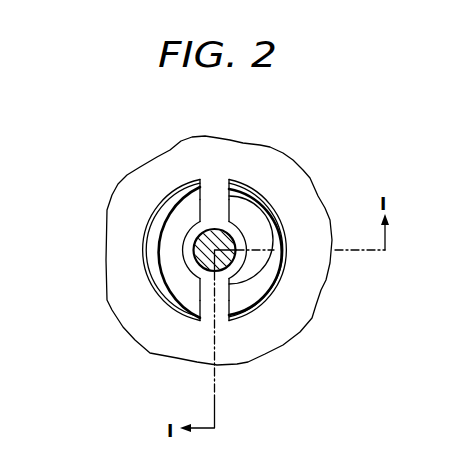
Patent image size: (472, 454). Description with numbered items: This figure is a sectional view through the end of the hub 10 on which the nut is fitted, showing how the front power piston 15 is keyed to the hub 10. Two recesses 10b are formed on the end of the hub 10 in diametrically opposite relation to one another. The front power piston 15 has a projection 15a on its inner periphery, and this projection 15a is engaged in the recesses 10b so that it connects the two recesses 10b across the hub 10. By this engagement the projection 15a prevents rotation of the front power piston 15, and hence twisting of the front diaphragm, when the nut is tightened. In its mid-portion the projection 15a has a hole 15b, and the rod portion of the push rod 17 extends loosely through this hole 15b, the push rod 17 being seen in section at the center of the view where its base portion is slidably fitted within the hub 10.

The hub 10 is at (162, 287).
The recesses 10b is at (228, 184).
The front power piston 15 is at (318, 288).
The projection 15a is at (255, 295).
The hole 15b is at (229, 236).
The push rod 17 is at (203, 265).